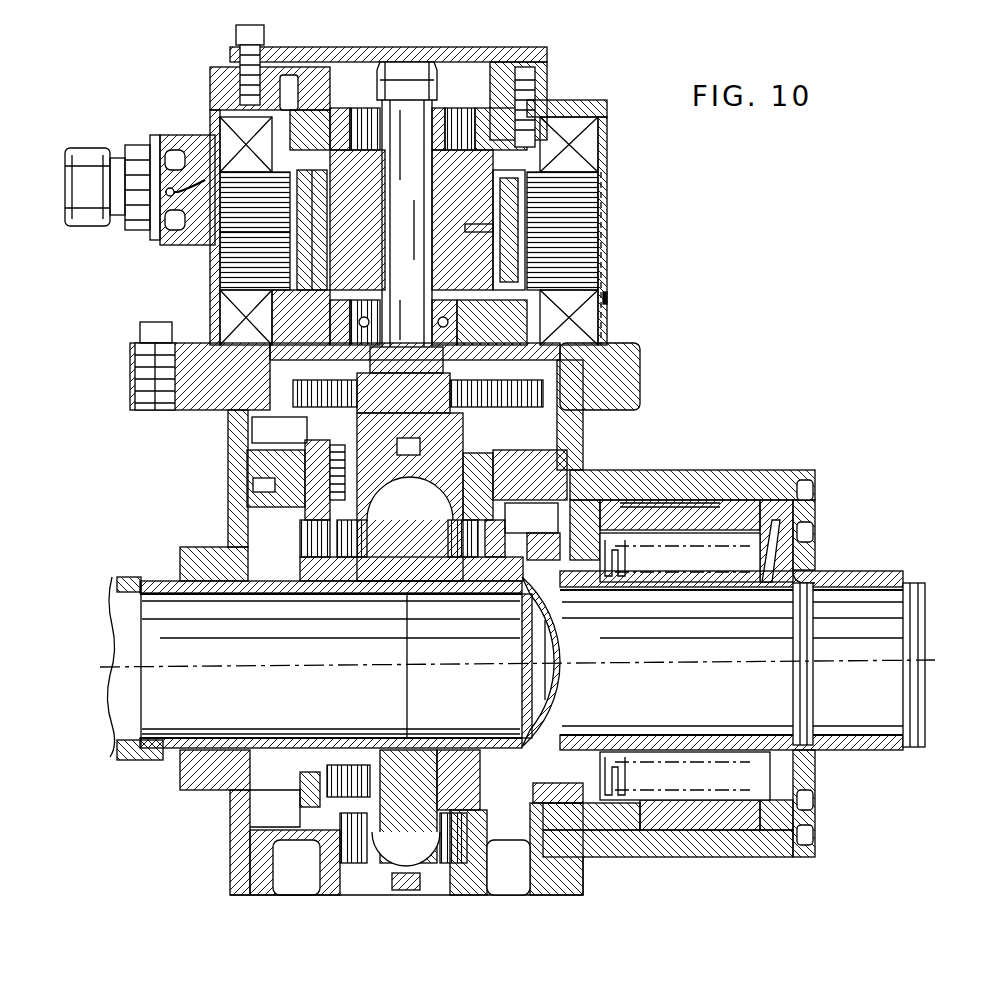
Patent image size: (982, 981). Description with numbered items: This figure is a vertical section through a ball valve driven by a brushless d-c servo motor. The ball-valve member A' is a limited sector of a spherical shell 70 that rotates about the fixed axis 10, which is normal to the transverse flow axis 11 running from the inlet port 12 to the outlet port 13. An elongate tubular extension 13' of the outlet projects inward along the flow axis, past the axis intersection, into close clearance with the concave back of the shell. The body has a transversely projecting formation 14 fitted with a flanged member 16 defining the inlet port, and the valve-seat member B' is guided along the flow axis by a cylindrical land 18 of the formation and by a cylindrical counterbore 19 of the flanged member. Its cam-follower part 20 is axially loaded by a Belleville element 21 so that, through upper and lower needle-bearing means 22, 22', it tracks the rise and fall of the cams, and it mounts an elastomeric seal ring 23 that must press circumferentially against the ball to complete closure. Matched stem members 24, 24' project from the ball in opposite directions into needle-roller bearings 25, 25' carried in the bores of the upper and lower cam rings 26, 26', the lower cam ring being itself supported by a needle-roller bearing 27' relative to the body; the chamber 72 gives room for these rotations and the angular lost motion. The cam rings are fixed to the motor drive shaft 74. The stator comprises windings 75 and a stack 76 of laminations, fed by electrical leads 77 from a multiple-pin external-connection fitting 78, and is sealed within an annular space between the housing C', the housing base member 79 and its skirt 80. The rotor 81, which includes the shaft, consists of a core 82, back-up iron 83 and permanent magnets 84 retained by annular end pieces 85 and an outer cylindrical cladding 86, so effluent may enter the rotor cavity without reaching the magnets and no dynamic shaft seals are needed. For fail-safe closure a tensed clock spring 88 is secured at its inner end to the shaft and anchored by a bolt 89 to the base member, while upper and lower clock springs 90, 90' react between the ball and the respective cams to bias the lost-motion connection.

The fixed axis 10 is at (410, 676).
The transverse axis of fluid flow 11 is at (703, 670).
The inlet port 12 is at (833, 600).
The outlet port 13 is at (313, 644).
The elongate tubular extension of the outlet 13' is at (331, 667).
The transversely projecting formation of body 14 is at (683, 477).
The flanged member 16 is at (813, 547).
The cylindrical land 18 is at (607, 503).
The cylindrical counterbore 19 is at (783, 592).
The cam-follower part 20 is at (565, 595).
The Belleville element 21 is at (760, 548).
The needle-bearing means 22 is at (531, 518).
The lower bearing pocket 22' is at (508, 867).
The elastomeric seal ring 23 is at (490, 582).
The stem or bearing member 24 is at (262, 469).
The stem or bearing member 24' is at (404, 838).
The needle-roller bearing 25 is at (557, 472).
The needle-roller bearing 25' is at (457, 870).
The upper cam ring 26 is at (306, 492).
The lower cam ring 26' is at (271, 856).
The needle-roller bearing 27' is at (300, 885).
The spherical shell 70 is at (550, 712).
The chamber 72 is at (268, 773).
The drive shaft 74 is at (407, 223).
The windings 75 is at (570, 135).
The stack of laminations 76 is at (603, 251).
The electrical leads 77 is at (205, 190).
The multiple-pin external-connection fitting 78 is at (97, 135).
The housing base member 79 is at (345, 366).
The skirt 80 is at (341, 47).
The rotor 81 is at (340, 170).
The core 82 is at (310, 232).
The back-up iron 83 is at (318, 262).
The permanent magnets 84 is at (272, 292).
The annular end pieces 85 is at (510, 170).
The outer cylindrical cladding or shell 86 is at (212, 128).
The clock spring 88 is at (580, 432).
The bolt 89 is at (603, 336).
The upper clock spring 90 is at (392, 552).
The lower clock spring 90' is at (324, 777).
The ball-valve member A' is at (572, 660).
The valve-seat member B' is at (552, 666).
The housing C' is at (648, 291).